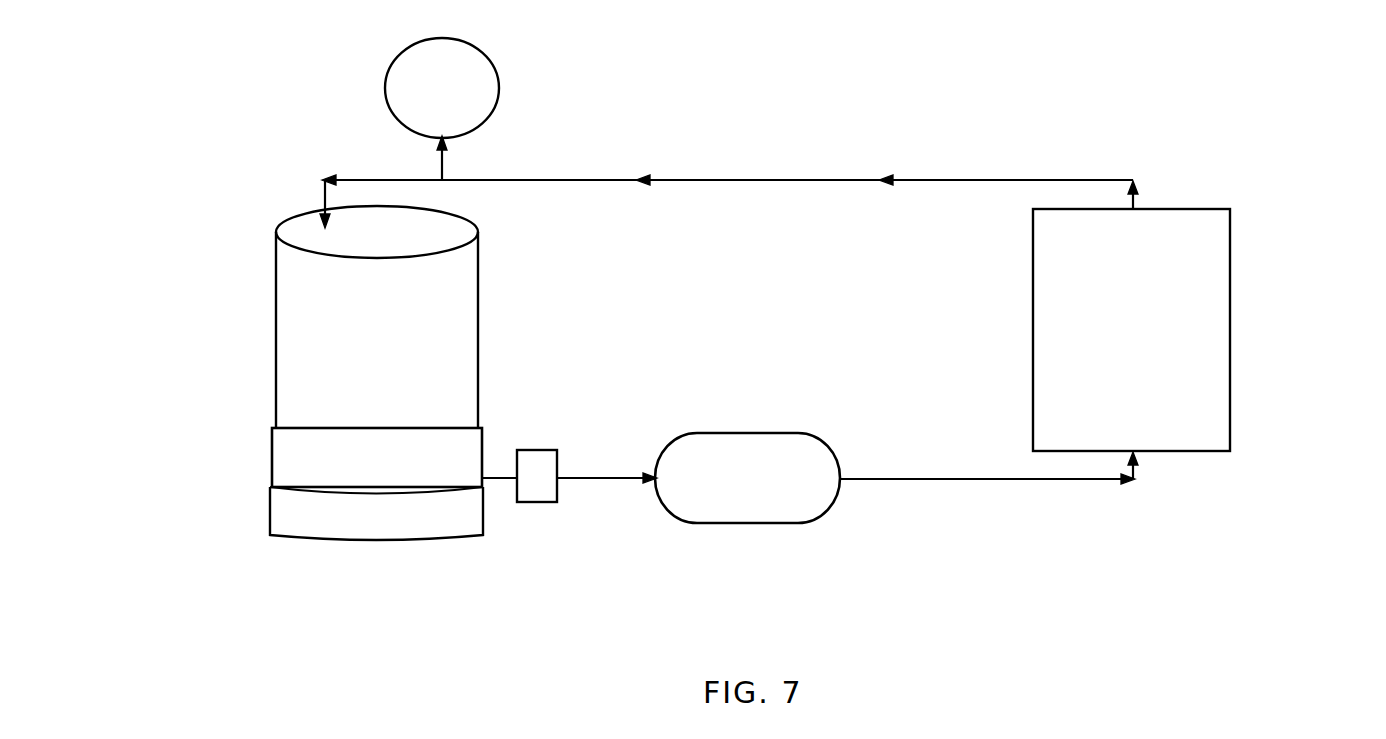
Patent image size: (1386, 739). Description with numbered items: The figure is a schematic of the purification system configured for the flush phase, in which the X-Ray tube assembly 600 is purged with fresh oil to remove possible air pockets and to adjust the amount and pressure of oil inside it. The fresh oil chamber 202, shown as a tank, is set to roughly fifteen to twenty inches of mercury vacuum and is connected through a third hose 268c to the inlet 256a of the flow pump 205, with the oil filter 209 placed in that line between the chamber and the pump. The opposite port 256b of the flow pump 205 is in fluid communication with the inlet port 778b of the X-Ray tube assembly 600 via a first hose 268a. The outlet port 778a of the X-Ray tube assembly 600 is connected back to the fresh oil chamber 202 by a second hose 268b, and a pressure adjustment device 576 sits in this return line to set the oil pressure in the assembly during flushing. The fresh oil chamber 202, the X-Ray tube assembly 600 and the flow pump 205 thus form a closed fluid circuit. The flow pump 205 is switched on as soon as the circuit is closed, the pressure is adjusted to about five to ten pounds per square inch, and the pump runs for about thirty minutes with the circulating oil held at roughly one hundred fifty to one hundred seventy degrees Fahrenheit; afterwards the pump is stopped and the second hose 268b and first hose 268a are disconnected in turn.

The pressure adjustment device 576 is at (500, 92).
The second hose 268b is at (782, 174).
The fresh oil chamber 202 is at (300, 380).
The oil filter 209 is at (541, 501).
The third hose 268c is at (596, 488).
The flow pump 205 is at (808, 515).
The inlet port of the pump 256a is at (654, 472).
The pump port 256b is at (842, 477).
The first hose 268a is at (977, 488).
The X-Ray tube assembly 600 is at (1230, 352).
The outlet port 778a is at (1156, 172).
The inlet port 778b is at (1143, 460).